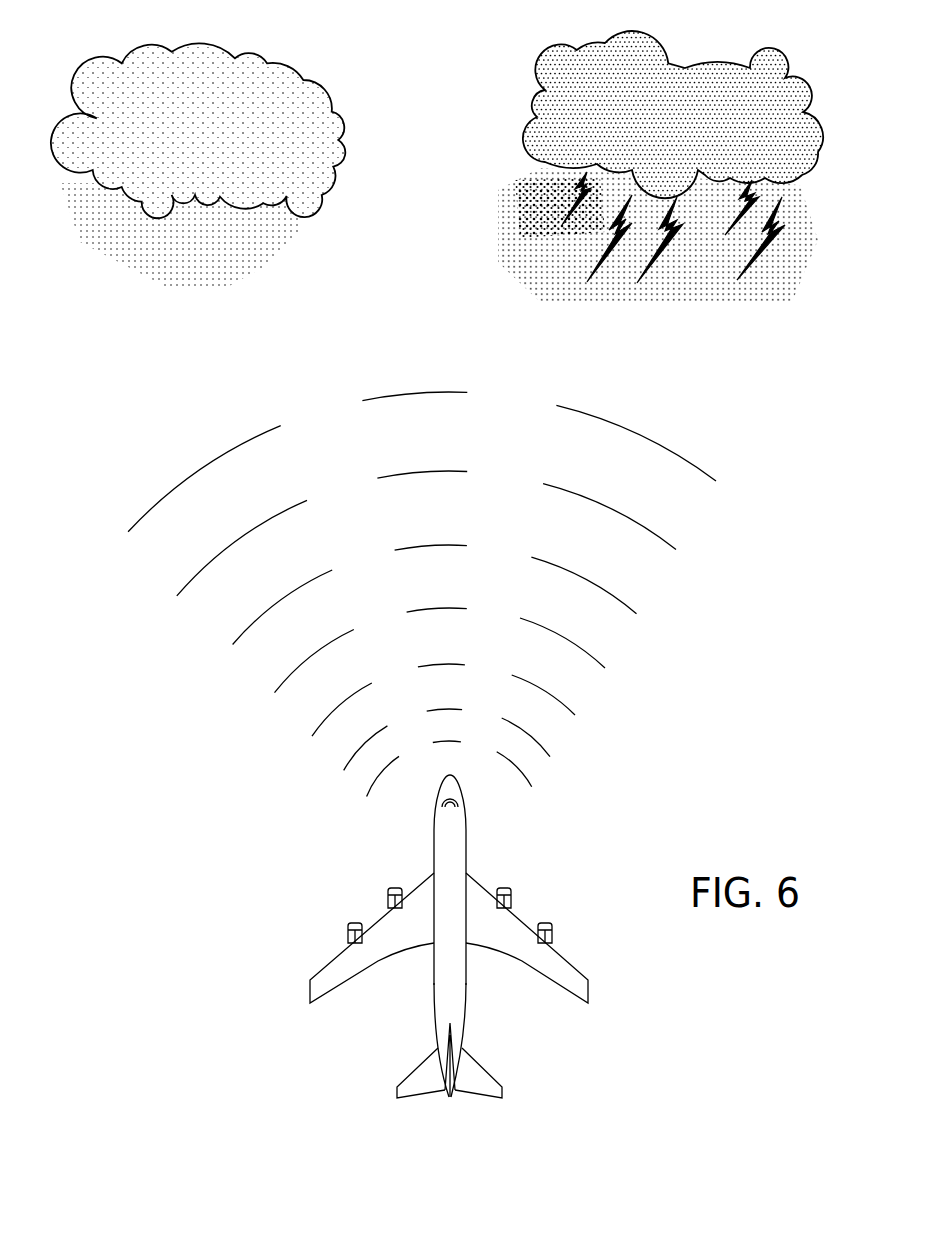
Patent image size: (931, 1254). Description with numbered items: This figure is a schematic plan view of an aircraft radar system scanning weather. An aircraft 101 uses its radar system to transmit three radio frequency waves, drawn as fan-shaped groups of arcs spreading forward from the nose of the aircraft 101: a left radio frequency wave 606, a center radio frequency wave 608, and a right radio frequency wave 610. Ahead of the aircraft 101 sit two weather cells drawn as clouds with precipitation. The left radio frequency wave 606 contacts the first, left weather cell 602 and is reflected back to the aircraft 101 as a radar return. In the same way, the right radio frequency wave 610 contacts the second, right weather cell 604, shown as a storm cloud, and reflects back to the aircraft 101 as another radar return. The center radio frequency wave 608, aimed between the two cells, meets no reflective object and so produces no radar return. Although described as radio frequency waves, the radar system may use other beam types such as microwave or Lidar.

The aircraft 101 is at (323, 983).
The first weather cell 602 is at (304, 102).
The second weather cell 604 is at (650, 46).
The left radio frequency wave 606 is at (207, 465).
The center radio frequency wave 608 is at (412, 393).
The right radio frequency wave 610 is at (657, 444).